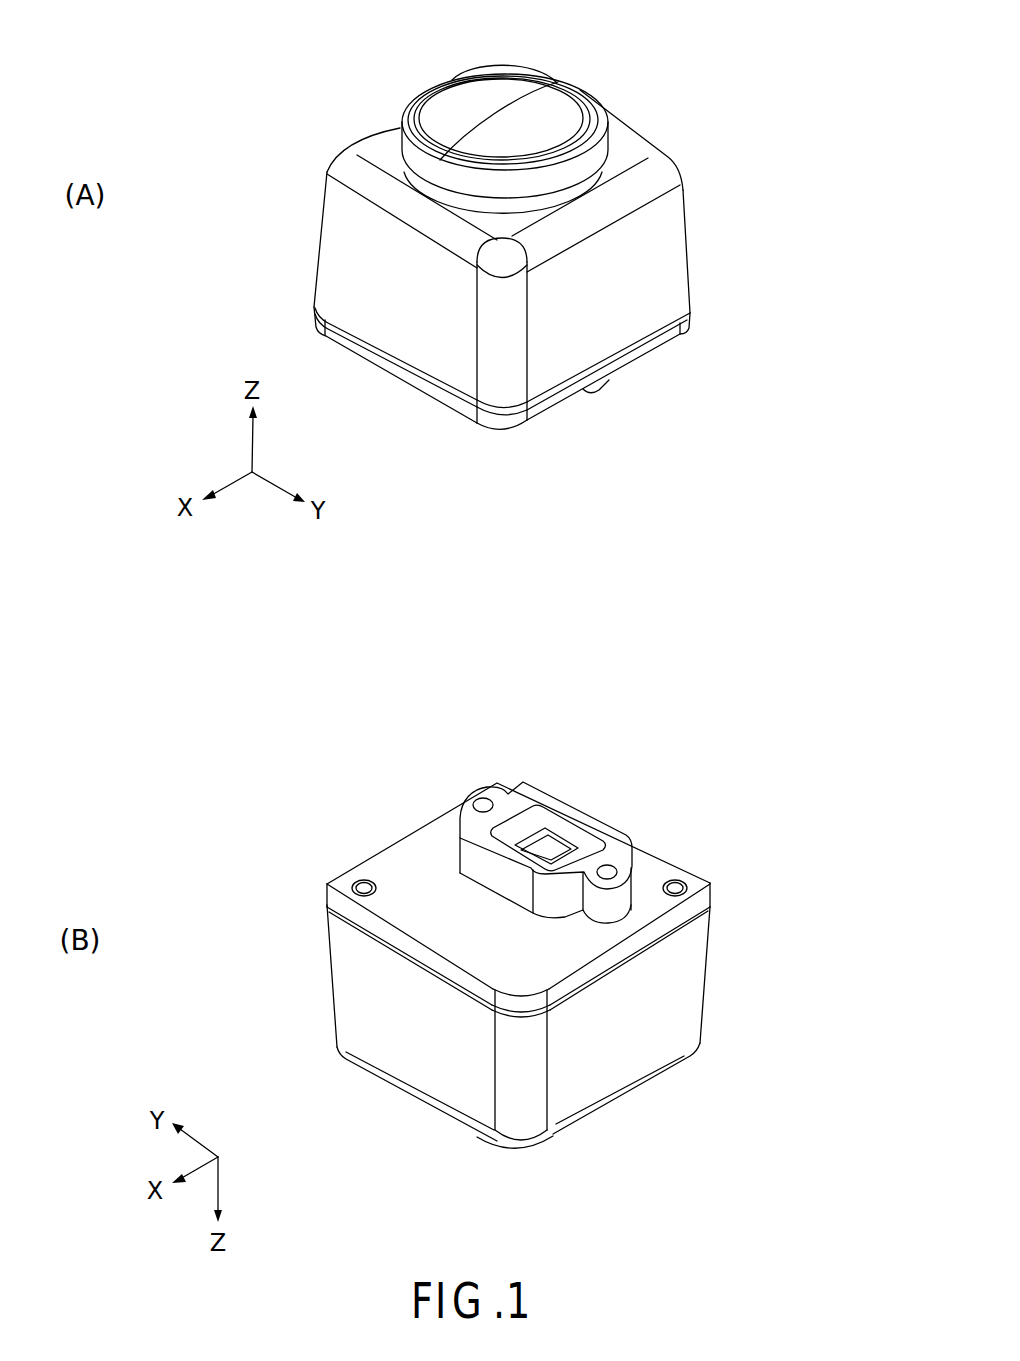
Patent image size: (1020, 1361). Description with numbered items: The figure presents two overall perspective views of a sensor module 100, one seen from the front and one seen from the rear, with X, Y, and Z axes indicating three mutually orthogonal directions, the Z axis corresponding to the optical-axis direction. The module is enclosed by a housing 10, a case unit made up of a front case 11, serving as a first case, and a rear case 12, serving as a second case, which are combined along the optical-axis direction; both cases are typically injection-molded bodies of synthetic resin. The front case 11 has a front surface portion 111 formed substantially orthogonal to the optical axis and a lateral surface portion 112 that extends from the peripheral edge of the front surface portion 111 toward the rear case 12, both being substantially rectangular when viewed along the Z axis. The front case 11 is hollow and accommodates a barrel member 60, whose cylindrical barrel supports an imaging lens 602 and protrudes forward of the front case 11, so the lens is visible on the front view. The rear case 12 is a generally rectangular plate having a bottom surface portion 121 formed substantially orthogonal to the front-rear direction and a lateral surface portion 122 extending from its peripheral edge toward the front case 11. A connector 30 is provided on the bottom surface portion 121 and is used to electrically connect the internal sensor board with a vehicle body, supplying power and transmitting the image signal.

The sensor module 100 is at (347, 84).
The housing 10 is at (237, 117).
The front case 11 is at (327, 172).
The front surface portion 111 is at (622, 153).
The lateral surface portion 112 is at (663, 255).
The rear case 12 is at (316, 310).
The bottom surface portion 121 is at (420, 856).
The lateral surface portion 122 is at (335, 916).
The barrel member 60 is at (585, 100).
The imaging lens 602 is at (501, 119).
The connector 30 is at (520, 810).